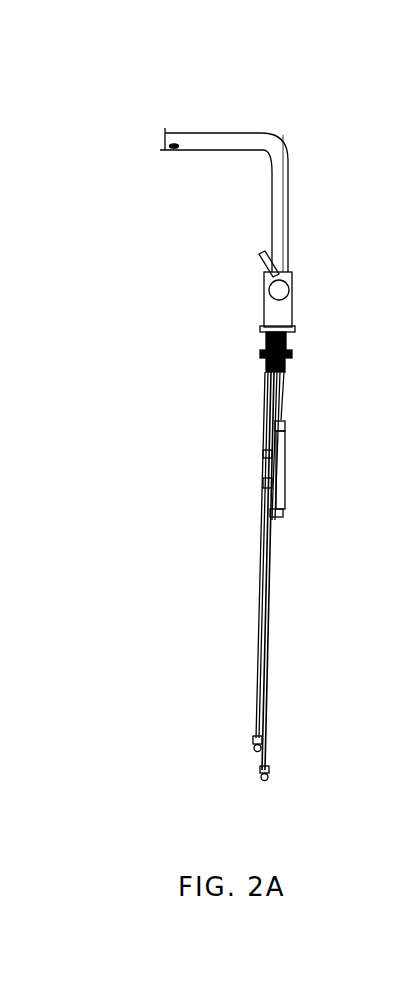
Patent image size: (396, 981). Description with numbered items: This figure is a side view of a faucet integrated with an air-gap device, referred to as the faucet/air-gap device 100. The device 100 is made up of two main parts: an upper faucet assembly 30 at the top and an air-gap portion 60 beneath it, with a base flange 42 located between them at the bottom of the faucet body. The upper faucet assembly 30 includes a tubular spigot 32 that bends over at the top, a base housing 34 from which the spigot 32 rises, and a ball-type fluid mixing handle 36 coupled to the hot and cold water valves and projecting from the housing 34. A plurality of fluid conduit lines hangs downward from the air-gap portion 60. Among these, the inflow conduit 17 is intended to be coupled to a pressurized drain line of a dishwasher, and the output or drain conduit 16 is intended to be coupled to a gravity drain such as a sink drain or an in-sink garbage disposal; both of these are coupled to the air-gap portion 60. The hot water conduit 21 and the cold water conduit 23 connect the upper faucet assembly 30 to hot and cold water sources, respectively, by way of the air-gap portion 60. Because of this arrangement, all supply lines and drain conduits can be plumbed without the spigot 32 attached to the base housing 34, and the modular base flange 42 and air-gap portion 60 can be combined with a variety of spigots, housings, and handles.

The faucet/air-gap device 100 is at (196, 411).
The upper faucet assembly 30 is at (132, 218).
The tubular spigot 32 is at (289, 201).
The base housing 34 is at (284, 311).
The fluid mixing handle 36 is at (264, 294).
The base flange 42 is at (258, 330).
The air-gap portion 60 is at (158, 352).
The output or drain conduit 16 is at (263, 446).
The inflow conduit 17 is at (282, 480).
The hot water conduit 21 is at (271, 686).
The cold water conduit 23 is at (262, 684).